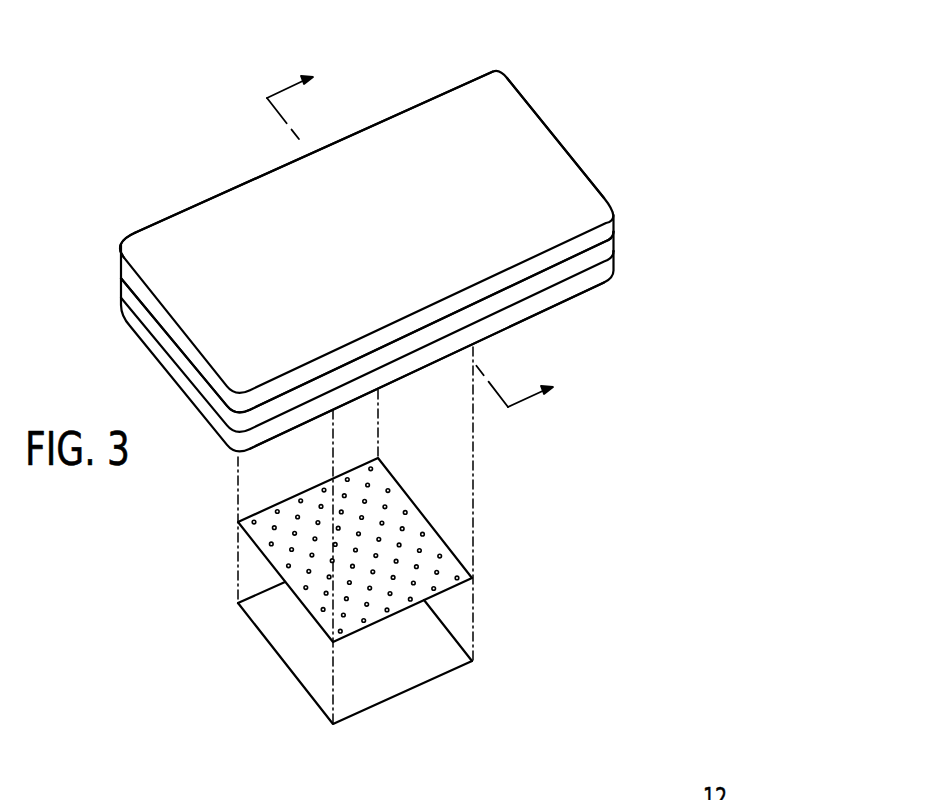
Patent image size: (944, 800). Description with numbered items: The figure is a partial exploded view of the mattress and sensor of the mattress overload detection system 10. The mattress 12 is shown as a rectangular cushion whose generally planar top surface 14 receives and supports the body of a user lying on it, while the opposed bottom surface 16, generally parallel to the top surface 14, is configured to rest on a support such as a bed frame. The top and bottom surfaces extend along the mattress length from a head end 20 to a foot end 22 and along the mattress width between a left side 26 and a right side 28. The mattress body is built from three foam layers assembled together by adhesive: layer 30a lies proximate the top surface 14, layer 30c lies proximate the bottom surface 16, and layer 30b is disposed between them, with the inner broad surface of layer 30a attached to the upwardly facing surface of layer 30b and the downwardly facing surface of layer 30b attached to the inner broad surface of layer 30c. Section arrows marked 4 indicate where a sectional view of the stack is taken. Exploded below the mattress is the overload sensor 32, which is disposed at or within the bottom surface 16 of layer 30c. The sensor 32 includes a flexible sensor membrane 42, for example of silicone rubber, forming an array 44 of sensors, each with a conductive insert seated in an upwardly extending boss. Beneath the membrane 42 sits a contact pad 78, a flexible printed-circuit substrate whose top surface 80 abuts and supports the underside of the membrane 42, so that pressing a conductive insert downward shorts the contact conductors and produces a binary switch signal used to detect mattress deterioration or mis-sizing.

The section line 4- 4 is at (414, 234).
The mattress overload detection system 10 is at (372, 89).
The mattress 12 is at (503, 72).
The top surface 14 is at (377, 248).
The bottom surface 16 is at (523, 325).
The head end 20 is at (553, 129).
The foot end 22 is at (148, 283).
The left side 26 is at (168, 222).
The right side 28 is at (541, 259).
The layer 30a is at (588, 245).
The layer 30b is at (596, 262).
The layer 30c is at (576, 290).
The overload sensor 32 is at (490, 608).
The flexible sensor membrane 42 is at (291, 498).
The array of sensors 44 is at (450, 568).
The contact pad 78 is at (370, 688).
The top surface 80 is at (407, 658).